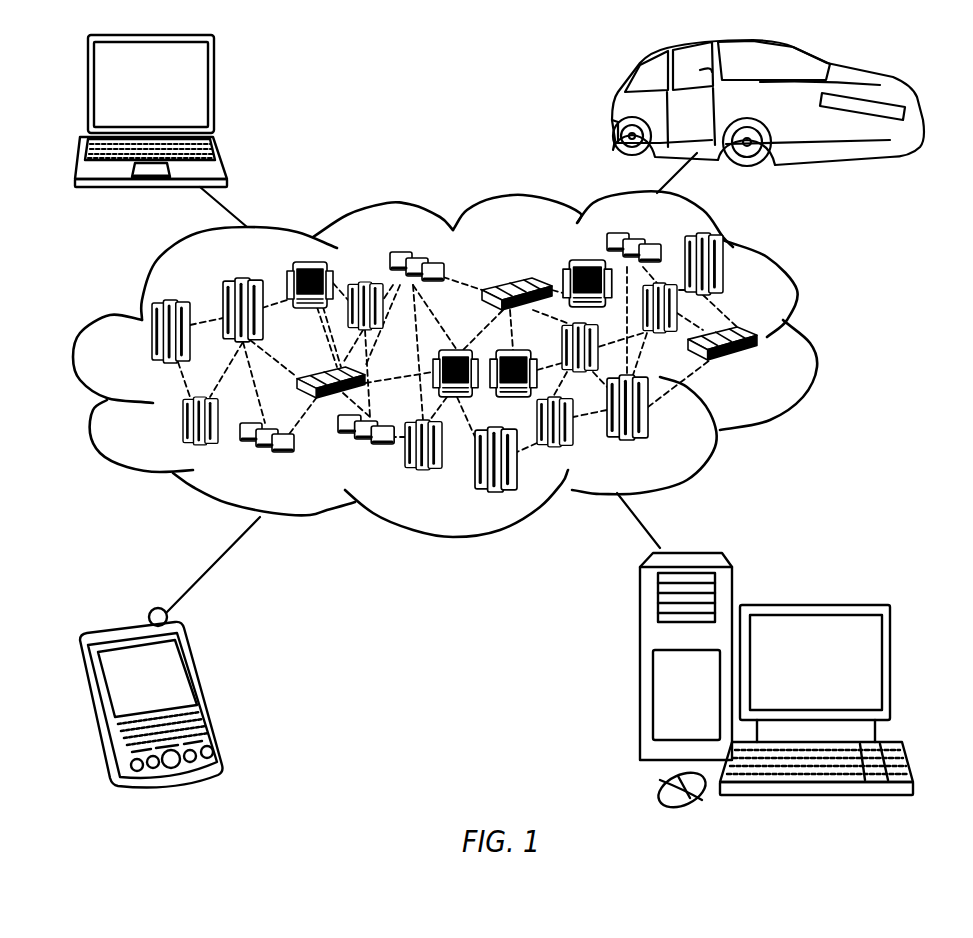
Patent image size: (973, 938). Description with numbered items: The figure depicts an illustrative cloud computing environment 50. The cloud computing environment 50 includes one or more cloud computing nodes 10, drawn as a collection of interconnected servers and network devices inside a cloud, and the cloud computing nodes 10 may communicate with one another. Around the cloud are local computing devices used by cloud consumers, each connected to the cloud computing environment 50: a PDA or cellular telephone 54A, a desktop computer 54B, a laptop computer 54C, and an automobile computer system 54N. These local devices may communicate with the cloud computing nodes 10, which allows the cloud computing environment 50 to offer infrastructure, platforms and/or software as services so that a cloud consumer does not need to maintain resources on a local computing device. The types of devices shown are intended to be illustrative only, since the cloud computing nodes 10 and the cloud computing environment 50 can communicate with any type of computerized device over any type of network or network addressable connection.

The cloud computing nodes 10 is at (758, 370).
The cloud computing environment 50 is at (813, 343).
The PDA or cellular telephone 54A is at (203, 692).
The desktop computer 54B is at (812, 605).
The laptop computer 54C is at (215, 92).
The automobile computer system 54N is at (613, 108).